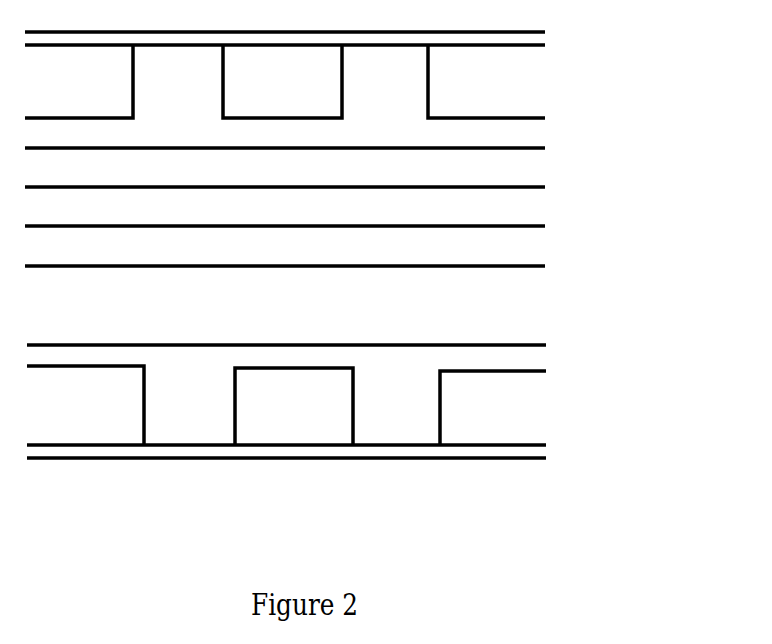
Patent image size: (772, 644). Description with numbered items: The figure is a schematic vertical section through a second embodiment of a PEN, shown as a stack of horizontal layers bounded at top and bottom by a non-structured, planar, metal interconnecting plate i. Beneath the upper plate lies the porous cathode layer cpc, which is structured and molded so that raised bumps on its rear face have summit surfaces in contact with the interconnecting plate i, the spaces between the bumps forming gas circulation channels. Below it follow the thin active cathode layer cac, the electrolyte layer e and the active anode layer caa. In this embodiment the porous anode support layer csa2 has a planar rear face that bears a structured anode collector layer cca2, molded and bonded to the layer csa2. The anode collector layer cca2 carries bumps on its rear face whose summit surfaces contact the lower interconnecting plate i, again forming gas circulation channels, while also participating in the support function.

The interconnecting plate i is at (65, 0).
The porous cathode layer cpc is at (369, 98).
The active cathode layer cac is at (369, 177).
The electrolyte layer e is at (350, 225).
The active anode layer caa is at (369, 269).
The porous anode support layer csa2 is at (379, 342).
The anode collector layer cca2 is at (379, 399).